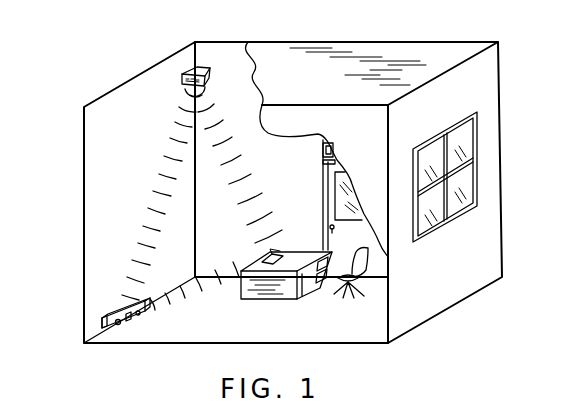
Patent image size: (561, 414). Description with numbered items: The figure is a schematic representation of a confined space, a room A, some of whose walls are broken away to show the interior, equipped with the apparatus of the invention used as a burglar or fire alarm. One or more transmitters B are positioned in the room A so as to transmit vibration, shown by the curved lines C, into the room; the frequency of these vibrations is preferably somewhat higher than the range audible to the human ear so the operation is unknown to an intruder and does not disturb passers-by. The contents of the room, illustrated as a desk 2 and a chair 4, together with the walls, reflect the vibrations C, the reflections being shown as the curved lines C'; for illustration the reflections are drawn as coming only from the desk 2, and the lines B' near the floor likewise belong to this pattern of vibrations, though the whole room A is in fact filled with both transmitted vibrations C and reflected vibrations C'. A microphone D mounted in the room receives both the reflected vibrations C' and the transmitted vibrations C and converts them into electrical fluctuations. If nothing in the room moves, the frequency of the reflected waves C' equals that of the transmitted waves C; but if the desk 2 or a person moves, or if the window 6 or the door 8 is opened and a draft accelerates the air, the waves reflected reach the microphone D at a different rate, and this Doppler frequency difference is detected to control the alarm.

The room A is at (206, 320).
The transmitter B is at (124, 301).
The sound waves along floor B' is at (191, 303).
The transmitted vibrations C is at (162, 194).
The reflected vibrations C' is at (229, 165).
The microphone D is at (188, 64).
The desk 2 is at (278, 293).
The chair 4 is at (347, 297).
The window 6 is at (480, 190).
The door 8 is at (343, 192).